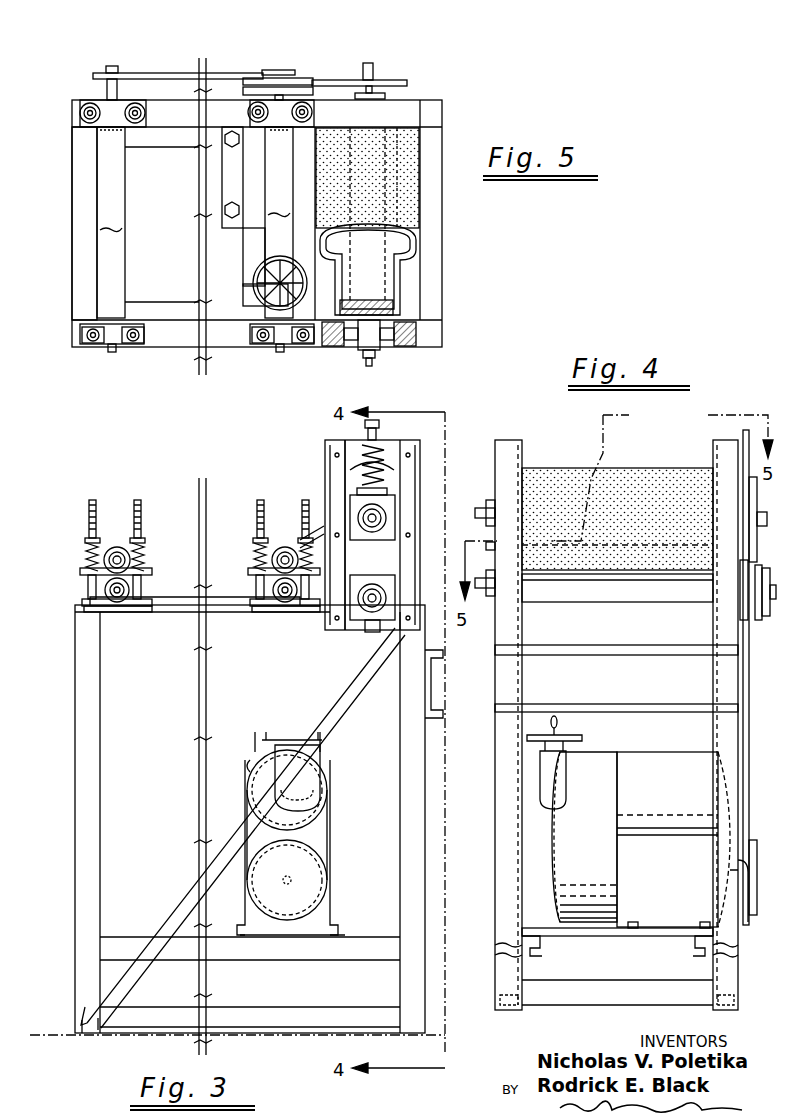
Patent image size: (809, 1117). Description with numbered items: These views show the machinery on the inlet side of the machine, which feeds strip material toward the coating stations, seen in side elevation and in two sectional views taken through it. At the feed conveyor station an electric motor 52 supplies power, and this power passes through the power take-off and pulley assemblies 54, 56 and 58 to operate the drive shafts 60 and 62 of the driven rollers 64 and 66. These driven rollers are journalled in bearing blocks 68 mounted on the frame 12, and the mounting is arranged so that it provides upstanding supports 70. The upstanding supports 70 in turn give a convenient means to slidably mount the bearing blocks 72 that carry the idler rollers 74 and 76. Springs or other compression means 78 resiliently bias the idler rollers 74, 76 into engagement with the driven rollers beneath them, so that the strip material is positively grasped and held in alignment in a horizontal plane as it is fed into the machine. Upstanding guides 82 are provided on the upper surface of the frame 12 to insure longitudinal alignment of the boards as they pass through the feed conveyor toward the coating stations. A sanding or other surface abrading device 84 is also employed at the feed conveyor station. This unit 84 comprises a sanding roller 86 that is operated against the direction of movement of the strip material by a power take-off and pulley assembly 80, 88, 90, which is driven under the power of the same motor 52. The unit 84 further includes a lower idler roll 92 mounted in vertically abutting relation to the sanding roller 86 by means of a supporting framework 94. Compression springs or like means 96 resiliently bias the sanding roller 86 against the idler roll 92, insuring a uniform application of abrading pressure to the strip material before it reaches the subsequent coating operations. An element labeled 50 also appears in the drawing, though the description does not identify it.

In FIG. 3, the frame 12 is at (88, 800).
In FIG. 5, the bolt 50 is at (112, 66).
In FIG. 5, the electric motor 52 is at (244, 260).
In FIG. 3, the electric motor 52 is at (330, 834).
In FIG. 4, the electric motor 52 is at (558, 867).
In FIG. 5, the power take-off and pulley assembly 54 is at (232, 96).
In FIG. 3, the power take-off and pulley assembly 54 is at (258, 688).
In FIG. 4, the power take-off and pulley assembly 54 is at (748, 760).
In FIG. 5, the power take-off and pulley assembly 56 is at (300, 78).
In FIG. 5, the power take-off and pulley assembly 58 is at (100, 72).
In FIG. 5, the drive shaft 60 is at (280, 354).
In FIG. 3, the drive shaft 60 is at (282, 596).
In FIG. 5, the drive shaft 62 is at (110, 352).
In FIG. 3, the drive shaft 62 is at (116, 596).
In FIG. 5, the driven roller 64 is at (276, 299).
In FIG. 5, the driven roller 66 is at (108, 282).
In FIG. 3, the bearing block 68 is at (82, 600).
In FIG. 5, the upstanding support 70 is at (108, 126).
In FIG. 3, the upstanding support 70 is at (136, 504).
In FIG. 3, the bearing block 72 is at (80, 571).
In FIG. 5, the idler roller 74 is at (276, 170).
In FIG. 5, the idler roller 76 is at (107, 180).
In FIG. 3, the spring 78 is at (86, 555).
In FIG. 5, the power take-off and pulley assembly 80 is at (258, 86).
In FIG. 5, the upstanding guide 82 is at (170, 140).
In FIG. 5, the sanding device 84 is at (444, 270).
In FIG. 3, the sanding device 84 is at (432, 500).
In FIG. 4, the sanding device 84 is at (554, 440).
In FIG. 5, the sanding roller 86 is at (420, 218).
In FIG. 3, the sanding roller 86 is at (424, 539).
In FIG. 4, the sanding roller 86 is at (638, 482).
In FIG. 5, the power take-off and pulley assembly 88 is at (326, 80).
In FIG. 3, the power take-off and pulley assembly 88 is at (308, 522).
In FIG. 4, the power take-off and pulley assembly 88 is at (760, 564).
In FIG. 5, the power take-off and pulley assembly 90 is at (374, 80).
In FIG. 4, the power take-off and pulley assembly 90 is at (760, 486).
In FIG. 4, the lower idler roll 92 is at (624, 593).
In FIG. 3, the supporting framework 94 is at (338, 450).
In FIG. 4, the supporting framework 94 is at (506, 444).
In FIG. 3, the compression spring 96 is at (380, 460).